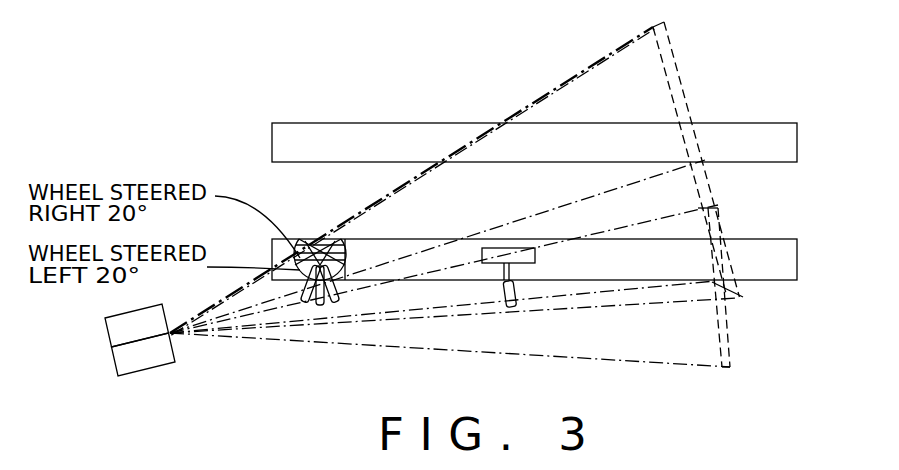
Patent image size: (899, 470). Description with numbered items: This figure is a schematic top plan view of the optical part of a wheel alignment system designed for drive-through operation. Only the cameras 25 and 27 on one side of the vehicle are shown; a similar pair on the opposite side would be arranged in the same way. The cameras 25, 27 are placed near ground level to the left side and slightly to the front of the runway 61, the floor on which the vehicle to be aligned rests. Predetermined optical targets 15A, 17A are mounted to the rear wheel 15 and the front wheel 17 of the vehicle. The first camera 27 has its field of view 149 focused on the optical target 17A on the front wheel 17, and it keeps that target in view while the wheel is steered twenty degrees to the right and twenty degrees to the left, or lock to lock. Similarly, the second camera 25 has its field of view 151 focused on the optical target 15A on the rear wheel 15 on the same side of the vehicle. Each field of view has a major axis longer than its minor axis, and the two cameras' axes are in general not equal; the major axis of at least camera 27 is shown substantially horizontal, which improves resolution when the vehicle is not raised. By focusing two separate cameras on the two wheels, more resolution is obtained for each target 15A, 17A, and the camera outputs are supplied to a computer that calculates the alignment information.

The rear wheel 15 is at (551, 275).
The optical target 15A is at (517, 288).
The front wheel 17 is at (352, 247).
The optical target 17A is at (337, 285).
The camera 25 is at (144, 354).
The camera 27 is at (137, 325).
The runway 61 is at (399, 156).
The field of view 149 is at (682, 80).
The field of view 151 is at (728, 330).